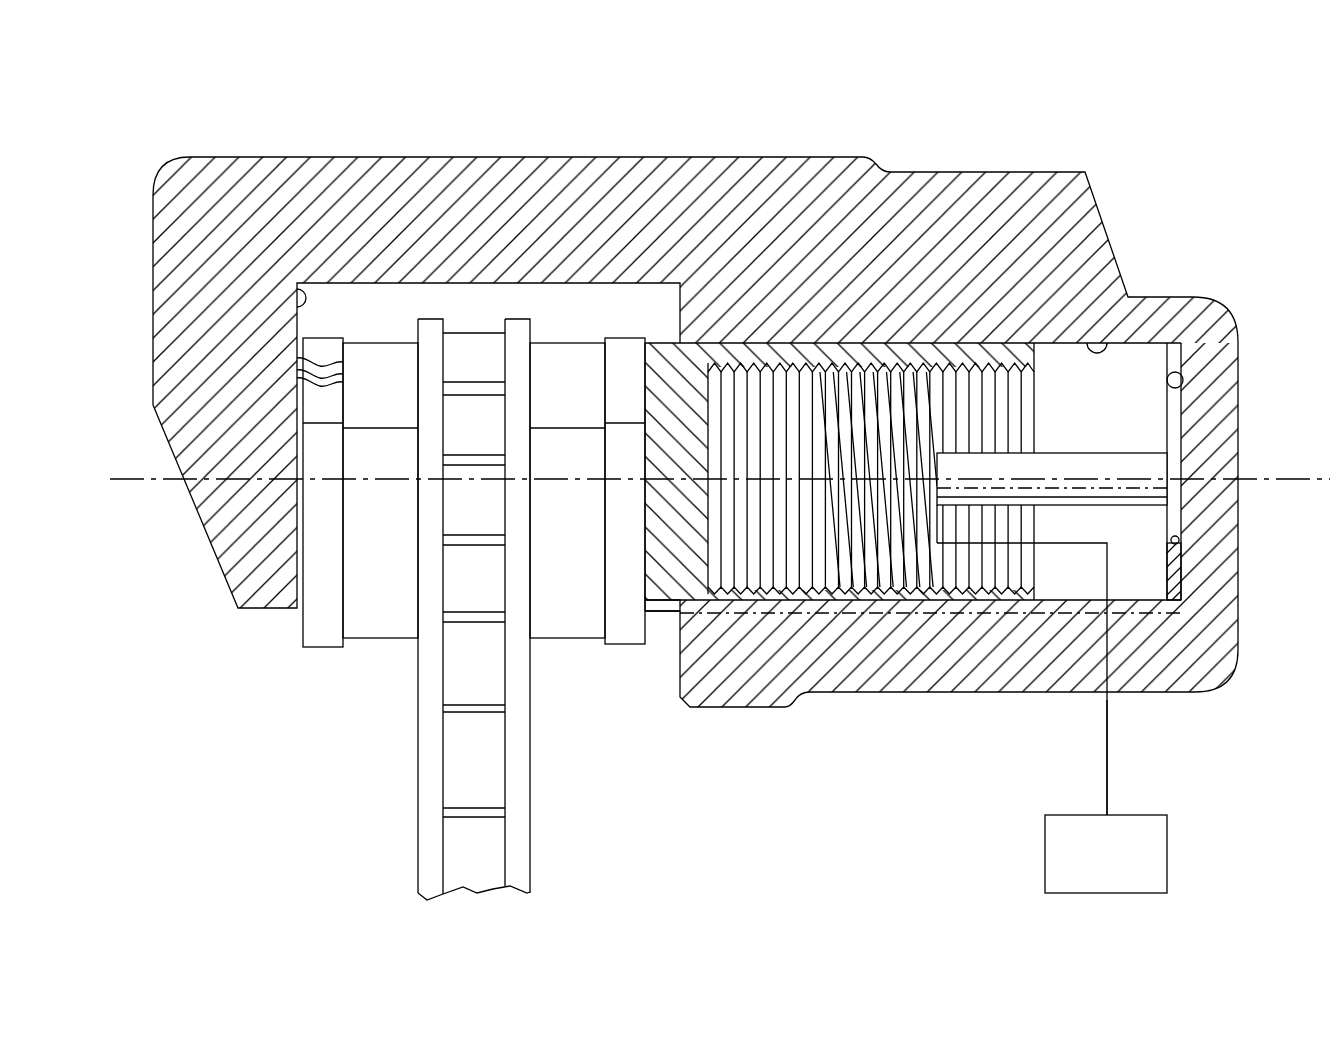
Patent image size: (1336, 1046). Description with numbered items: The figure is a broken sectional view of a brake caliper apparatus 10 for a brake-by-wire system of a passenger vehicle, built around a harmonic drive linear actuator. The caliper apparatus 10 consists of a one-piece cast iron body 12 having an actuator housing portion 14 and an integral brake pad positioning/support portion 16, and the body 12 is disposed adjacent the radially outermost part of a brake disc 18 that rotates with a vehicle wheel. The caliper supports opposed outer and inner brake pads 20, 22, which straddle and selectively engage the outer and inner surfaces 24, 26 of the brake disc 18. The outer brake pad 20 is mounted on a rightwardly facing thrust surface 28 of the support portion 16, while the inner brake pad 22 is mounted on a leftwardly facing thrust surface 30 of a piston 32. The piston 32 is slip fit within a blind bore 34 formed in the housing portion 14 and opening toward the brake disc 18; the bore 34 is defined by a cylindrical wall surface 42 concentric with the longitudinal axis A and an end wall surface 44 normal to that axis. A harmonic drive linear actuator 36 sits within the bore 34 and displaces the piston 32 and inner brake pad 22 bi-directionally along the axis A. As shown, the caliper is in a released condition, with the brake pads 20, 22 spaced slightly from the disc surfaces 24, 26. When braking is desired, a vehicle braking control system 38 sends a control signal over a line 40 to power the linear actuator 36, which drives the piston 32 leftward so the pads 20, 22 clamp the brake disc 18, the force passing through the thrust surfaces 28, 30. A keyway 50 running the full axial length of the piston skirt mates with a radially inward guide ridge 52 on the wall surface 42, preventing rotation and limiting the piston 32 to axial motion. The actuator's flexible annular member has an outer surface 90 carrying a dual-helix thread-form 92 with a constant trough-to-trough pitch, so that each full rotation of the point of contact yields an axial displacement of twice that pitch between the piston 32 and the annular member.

The brake caliper apparatus 10 is at (698, 510).
The one-piece cast iron body 12 is at (695, 386).
The actuator housing portion 14 is at (993, 177).
The brake pad positioning/support portion 16 is at (360, 165).
The brake disc 18 is at (474, 637).
The outer brake pad 20 is at (224, 512).
The inner brake pad 22 is at (562, 638).
The outer surface of brake disc 24 is at (469, 622).
The inner surface of brake disc 26 is at (532, 825).
The rightwardly facing thrust surface 28 is at (300, 285).
The leftwardly facing thrust surface 30 is at (645, 357).
The piston 32 is at (829, 352).
The blind bore 34 is at (1145, 565).
The harmonic drive linear actuator 36 is at (986, 625).
The vehicle braking control system 38 is at (1160, 855).
The line 40 is at (1115, 715).
The cylindrical wall surface 42 is at (1100, 345).
The end wall surface 44 is at (1180, 388).
The keyway 50 is at (658, 608).
The guide ridge 52 is at (1049, 605).
The outer surface of outer ring 90 is at (993, 424).
The thread-form 92 is at (905, 592).
The longitudinal axis A is at (130, 482).